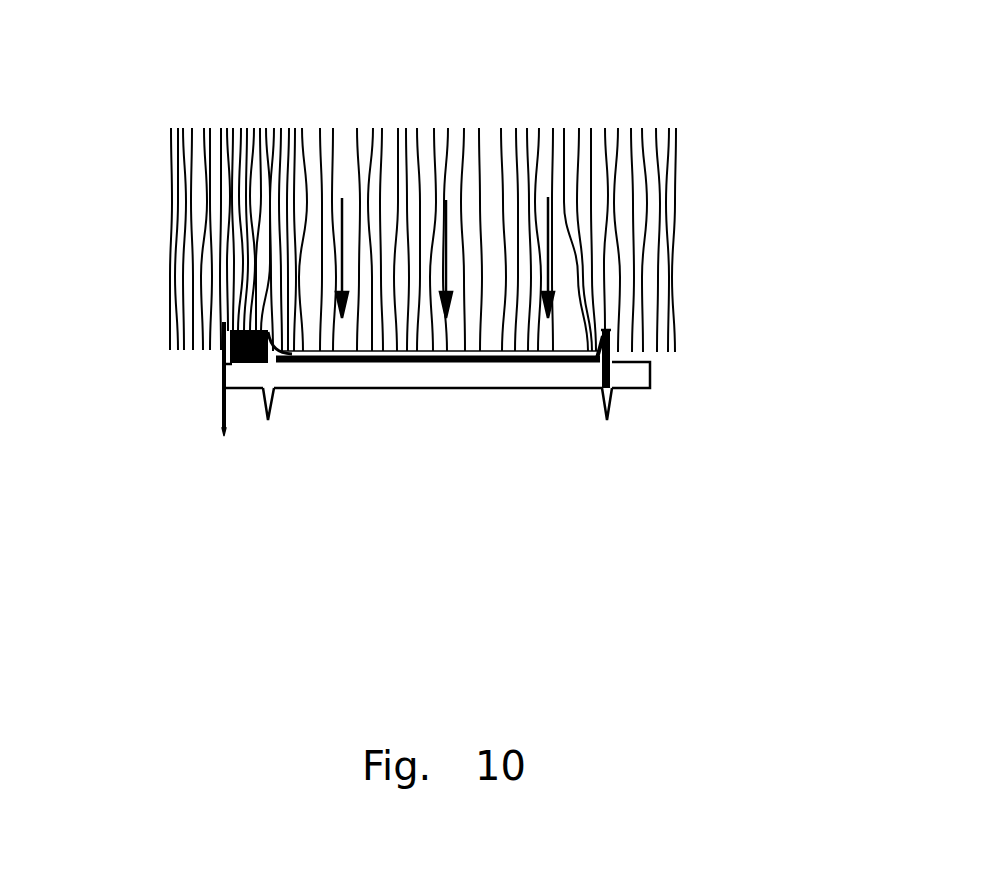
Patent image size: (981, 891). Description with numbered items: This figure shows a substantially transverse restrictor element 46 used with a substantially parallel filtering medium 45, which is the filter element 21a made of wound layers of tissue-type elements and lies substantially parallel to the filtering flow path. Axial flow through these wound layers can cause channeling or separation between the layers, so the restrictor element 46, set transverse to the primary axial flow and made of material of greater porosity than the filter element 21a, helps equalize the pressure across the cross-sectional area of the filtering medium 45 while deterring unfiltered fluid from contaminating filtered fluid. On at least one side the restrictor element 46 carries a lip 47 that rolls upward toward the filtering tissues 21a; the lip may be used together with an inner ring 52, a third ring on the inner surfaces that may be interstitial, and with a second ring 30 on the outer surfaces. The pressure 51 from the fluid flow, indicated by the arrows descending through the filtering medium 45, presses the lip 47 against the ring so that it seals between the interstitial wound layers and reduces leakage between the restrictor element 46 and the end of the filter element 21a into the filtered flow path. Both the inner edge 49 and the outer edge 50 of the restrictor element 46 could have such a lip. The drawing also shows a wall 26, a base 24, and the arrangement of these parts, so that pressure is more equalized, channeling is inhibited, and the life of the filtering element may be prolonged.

The filter element 21a is at (593, 225).
The substantially parallel filtering medium 45 is at (370, 131).
The pressure 51 is at (342, 205).
The side wall 26 is at (226, 322).
The second ring 30 is at (238, 351).
The outer edge 50 is at (268, 352).
The base plate 24 is at (317, 373).
The restrictor element 46 is at (505, 363).
The lip 47 is at (608, 350).
The inner edge 49 is at (610, 333).
The inner ring 52 is at (613, 402).